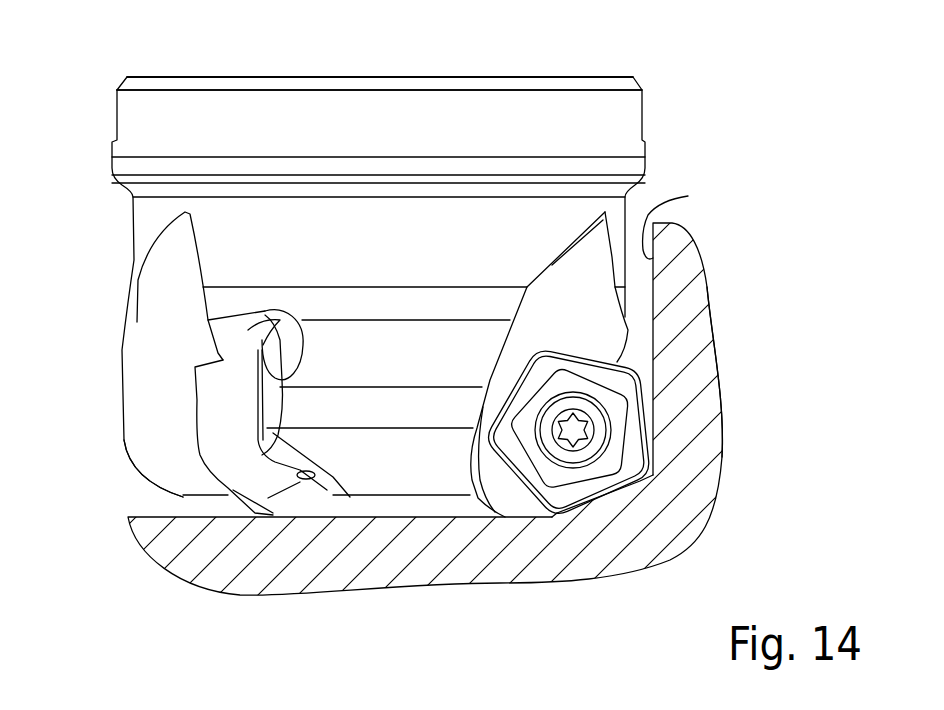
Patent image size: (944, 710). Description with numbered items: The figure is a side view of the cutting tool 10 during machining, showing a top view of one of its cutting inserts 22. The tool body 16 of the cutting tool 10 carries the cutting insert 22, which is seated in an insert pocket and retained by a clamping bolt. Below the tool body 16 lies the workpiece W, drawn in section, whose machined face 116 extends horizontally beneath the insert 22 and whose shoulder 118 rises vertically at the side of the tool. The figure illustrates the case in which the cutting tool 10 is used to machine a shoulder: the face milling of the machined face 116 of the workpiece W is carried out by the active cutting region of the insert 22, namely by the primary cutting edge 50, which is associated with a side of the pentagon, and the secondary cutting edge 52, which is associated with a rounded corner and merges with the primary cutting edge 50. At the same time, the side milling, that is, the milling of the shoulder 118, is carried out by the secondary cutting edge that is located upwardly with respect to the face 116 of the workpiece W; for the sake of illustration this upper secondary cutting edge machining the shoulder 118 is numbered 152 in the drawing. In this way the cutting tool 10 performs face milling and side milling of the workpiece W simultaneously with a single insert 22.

The cutting tool 10 is at (673, 88).
The tool body 16 is at (597, 147).
The cutting insert 22 is at (620, 407).
The workpiece W is at (170, 547).
The shoulder 118 is at (687, 216).
The secondary cutting edge 152 is at (655, 478).
The machined face 116 is at (158, 517).
The secondary cutting edge 52 is at (555, 517).
The primary cutting edge 50 is at (607, 502).